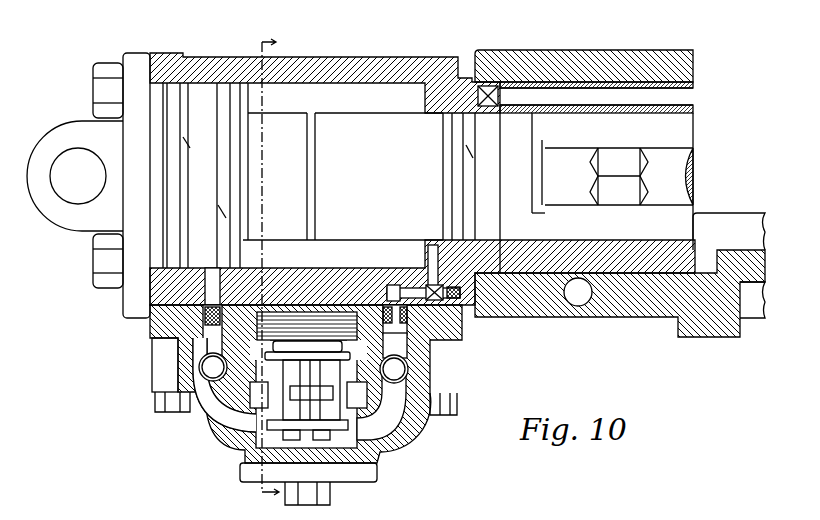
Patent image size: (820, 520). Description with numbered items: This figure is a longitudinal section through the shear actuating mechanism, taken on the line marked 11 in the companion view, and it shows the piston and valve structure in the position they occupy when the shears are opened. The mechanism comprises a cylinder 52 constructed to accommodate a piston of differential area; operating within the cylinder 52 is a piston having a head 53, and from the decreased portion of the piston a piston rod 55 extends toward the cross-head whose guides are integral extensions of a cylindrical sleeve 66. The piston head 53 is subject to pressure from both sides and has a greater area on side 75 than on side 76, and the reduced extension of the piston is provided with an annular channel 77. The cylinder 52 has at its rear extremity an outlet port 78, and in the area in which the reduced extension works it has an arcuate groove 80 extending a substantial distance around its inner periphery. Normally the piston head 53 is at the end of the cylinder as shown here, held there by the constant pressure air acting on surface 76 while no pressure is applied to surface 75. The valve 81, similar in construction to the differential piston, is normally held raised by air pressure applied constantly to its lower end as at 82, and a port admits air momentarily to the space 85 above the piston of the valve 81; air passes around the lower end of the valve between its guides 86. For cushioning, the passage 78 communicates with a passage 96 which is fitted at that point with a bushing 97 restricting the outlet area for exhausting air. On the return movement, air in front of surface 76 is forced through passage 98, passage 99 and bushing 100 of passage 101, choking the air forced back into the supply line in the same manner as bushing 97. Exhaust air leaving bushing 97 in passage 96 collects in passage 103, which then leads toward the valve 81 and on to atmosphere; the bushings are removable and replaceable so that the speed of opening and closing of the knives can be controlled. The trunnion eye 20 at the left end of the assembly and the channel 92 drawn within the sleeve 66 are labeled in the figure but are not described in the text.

The clevis / trunnion eye 20 is at (50, 210).
The cylinder 52 is at (337, 70).
The piston head 53 is at (201, 92).
The piston rod 55 is at (660, 157).
The cylindrical sleeve 66 is at (583, 63).
The side of piston head 75 is at (164, 90).
The side of piston head 76 is at (240, 102).
The annular channel 77 is at (313, 176).
The outlet port 78 is at (248, 281).
The arcuate groove 80 is at (500, 267).
The valve 81 is at (298, 392).
The lower end of valve 82 is at (378, 466).
The space above valve piston 85 is at (314, 312).
The guides 86 is at (306, 408).
The channel 92 is at (673, 95).
The passage 96 is at (209, 348).
The bushing 97 is at (204, 323).
The passage 98 is at (430, 287).
The passage 99 is at (405, 292).
The bushing 100 is at (440, 325).
The passage 101 is at (397, 344).
The passage 103 is at (212, 369).
The section line 11- 11 is at (275, 268).